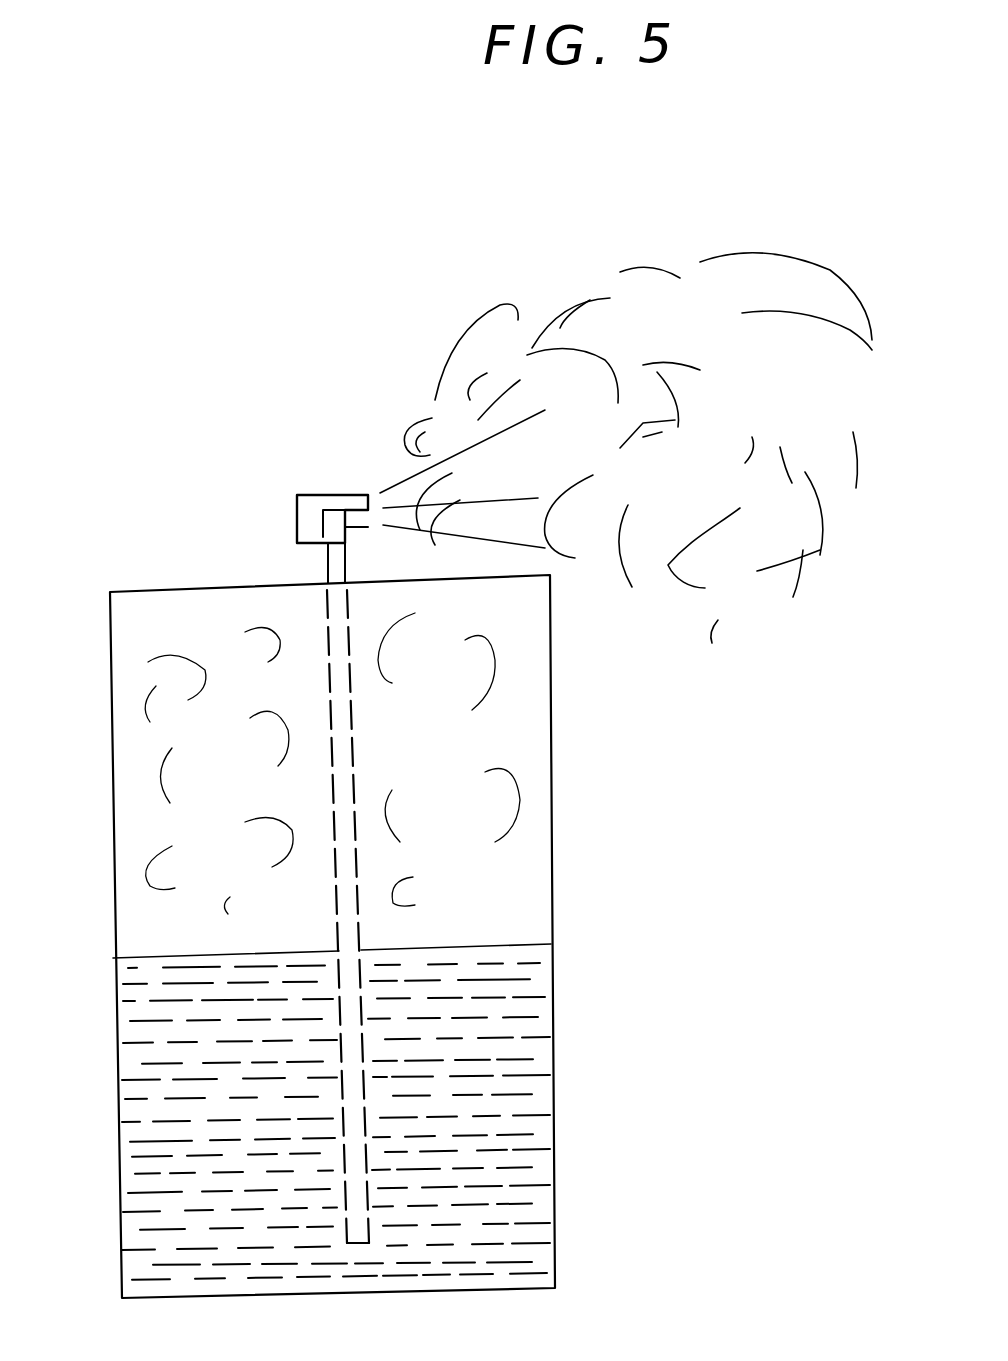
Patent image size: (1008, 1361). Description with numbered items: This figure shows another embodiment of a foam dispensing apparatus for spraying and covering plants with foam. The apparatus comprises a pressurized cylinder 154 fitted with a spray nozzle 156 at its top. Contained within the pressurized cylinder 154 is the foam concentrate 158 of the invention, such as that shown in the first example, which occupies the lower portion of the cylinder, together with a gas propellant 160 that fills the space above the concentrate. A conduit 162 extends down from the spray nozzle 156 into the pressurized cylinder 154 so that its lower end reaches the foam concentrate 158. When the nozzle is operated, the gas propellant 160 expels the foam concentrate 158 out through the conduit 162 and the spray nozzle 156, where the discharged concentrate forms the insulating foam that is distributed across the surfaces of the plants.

The pressurized cylinder 154 is at (556, 757).
The spray nozzle 156 is at (295, 512).
The foam concentrate 158 is at (525, 1042).
The gas propellant 160 is at (503, 866).
The conduit 162 is at (328, 623).